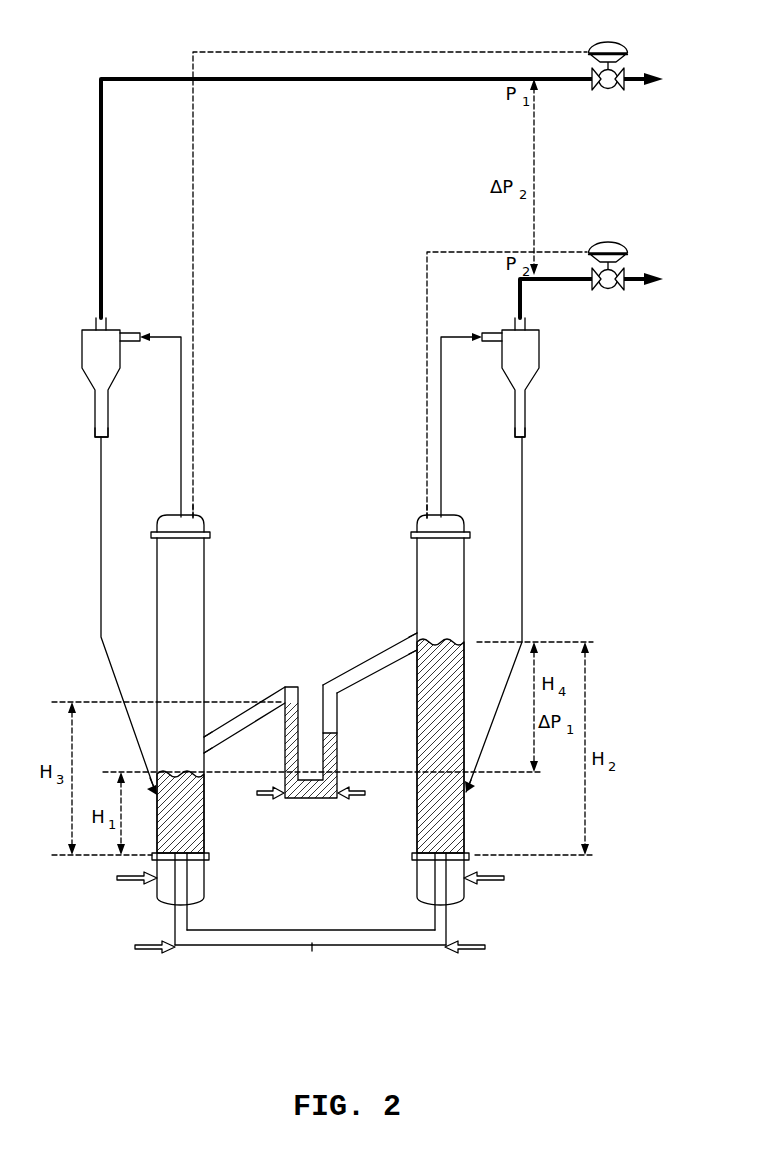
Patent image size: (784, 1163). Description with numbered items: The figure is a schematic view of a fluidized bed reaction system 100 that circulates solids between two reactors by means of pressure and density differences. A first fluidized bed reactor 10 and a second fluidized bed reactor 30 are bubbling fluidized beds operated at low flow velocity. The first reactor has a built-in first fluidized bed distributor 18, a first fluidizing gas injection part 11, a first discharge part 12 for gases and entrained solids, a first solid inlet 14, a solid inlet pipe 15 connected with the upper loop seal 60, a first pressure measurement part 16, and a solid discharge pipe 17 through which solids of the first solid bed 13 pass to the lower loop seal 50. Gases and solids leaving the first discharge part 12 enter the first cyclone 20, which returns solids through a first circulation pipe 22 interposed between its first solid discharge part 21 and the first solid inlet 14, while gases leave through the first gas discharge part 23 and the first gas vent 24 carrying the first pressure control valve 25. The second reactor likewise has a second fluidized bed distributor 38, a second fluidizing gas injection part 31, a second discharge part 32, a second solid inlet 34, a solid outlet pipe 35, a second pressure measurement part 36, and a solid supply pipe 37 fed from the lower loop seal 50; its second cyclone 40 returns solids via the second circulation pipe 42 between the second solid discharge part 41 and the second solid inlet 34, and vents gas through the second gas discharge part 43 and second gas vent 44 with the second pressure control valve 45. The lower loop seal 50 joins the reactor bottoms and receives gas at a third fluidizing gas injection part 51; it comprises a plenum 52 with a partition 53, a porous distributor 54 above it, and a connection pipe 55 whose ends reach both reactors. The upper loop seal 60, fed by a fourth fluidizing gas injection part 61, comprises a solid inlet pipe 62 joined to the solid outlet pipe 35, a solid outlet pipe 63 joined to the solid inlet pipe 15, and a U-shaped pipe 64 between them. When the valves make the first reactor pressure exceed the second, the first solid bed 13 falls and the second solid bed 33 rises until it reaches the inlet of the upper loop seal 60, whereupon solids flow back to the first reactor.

The fluidized bed reaction system 100 is at (331, 42).
The first fluidized bed reactor 10 is at (204, 573).
The first fluidizing gas injection part 11 is at (156, 884).
The first discharge part 12 is at (181, 516).
The first solid bed 13 is at (195, 828).
The first solid inlet 14 is at (156, 797).
The solid inlet pipe 15 is at (208, 745).
The first pressure measurement part 16 is at (194, 519).
The solid discharge pipe 17 is at (180, 874).
The first fluidized bed distributor 18 is at (212, 857).
The first cyclone 20 is at (88, 353).
The first solid discharge part 21 is at (99, 433).
The first circulation pipe 22 is at (101, 541).
The first gas discharge part 23 is at (96, 324).
The first gas vent 24 is at (152, 78).
The first pressure control valve 25 is at (608, 43).
The second fluidized bed reactor 30 is at (417, 560).
The second fluidizing gas injection part 31 is at (470, 888).
The second discharge part 32 is at (441, 516).
The second solid bed 33 is at (425, 818).
The second solid inlet 34 is at (466, 800).
The solid outlet pipe 35 is at (415, 635).
The second pressure measurement part 36 is at (427, 518).
The solid supply pipe 37 is at (438, 878).
The second fluidized bed distributor 38 is at (412, 857).
The second cyclone 40 is at (532, 353).
The second solid discharge part 41 is at (525, 433).
The second circulation pipe 42 is at (522, 508).
The second gas discharge part 43 is at (525, 323).
The second gas vent 44 is at (558, 278).
The second pressure control valve 45 is at (608, 244).
The lower loop seal 50 is at (310, 955).
The third fluidizing gas injection part 51 is at (177, 950).
The plenum 52 is at (228, 948).
The partition 53 is at (313, 950).
The distributor 54 is at (258, 942).
The connection pipe 55 is at (352, 937).
The upper loop seal 60 is at (310, 723).
The fourth fluidizing gas injection part 61 is at (289, 803).
The solid inlet pipe 62 is at (370, 658).
The solid outlet pipe 63 is at (250, 714).
The U-shaped pipe 64 is at (330, 750).